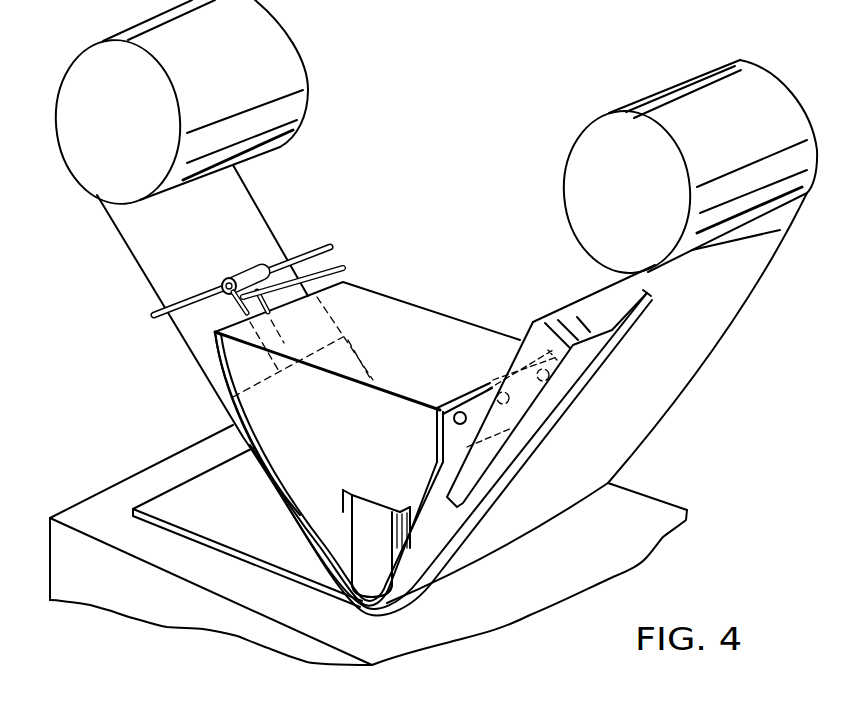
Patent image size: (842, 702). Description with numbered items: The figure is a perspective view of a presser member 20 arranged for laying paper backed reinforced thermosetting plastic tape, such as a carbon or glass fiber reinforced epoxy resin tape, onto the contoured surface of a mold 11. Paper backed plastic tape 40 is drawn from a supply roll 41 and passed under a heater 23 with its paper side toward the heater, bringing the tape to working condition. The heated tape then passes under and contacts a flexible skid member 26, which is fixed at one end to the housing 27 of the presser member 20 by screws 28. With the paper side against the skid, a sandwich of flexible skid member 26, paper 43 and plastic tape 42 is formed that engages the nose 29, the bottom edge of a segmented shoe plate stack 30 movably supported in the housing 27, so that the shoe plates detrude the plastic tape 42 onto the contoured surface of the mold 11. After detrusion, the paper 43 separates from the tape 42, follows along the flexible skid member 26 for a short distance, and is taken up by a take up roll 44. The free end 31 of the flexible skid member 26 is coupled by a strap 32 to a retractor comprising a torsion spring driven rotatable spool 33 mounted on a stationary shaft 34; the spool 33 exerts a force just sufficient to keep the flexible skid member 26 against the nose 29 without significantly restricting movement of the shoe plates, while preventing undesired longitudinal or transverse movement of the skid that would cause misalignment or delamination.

The mold 11 is at (495, 608).
The presser member 20 is at (215, 373).
The heater 23 is at (528, 322).
The flexible skid member 26 is at (436, 434).
The housing 27 is at (316, 437).
The screws 28 is at (456, 412).
The nose 29 is at (368, 607).
The segmented shoe plate stack 30 is at (350, 557).
The free end 31 is at (222, 400).
The strap 32 is at (330, 280).
The spool 33 is at (256, 268).
The stationary shaft 34 is at (332, 246).
The paper backed plastic tape 40 is at (685, 355).
The supply roll 41 is at (632, 207).
The plastic tape 42 is at (207, 543).
The paper 43 is at (152, 291).
The take up roll 44 is at (128, 133).